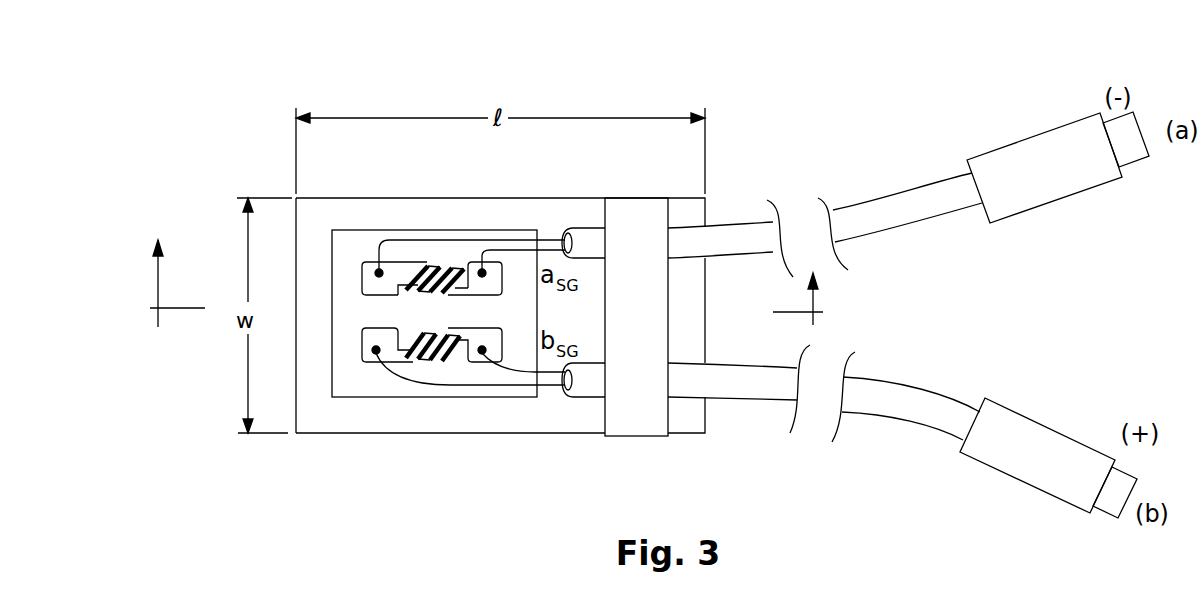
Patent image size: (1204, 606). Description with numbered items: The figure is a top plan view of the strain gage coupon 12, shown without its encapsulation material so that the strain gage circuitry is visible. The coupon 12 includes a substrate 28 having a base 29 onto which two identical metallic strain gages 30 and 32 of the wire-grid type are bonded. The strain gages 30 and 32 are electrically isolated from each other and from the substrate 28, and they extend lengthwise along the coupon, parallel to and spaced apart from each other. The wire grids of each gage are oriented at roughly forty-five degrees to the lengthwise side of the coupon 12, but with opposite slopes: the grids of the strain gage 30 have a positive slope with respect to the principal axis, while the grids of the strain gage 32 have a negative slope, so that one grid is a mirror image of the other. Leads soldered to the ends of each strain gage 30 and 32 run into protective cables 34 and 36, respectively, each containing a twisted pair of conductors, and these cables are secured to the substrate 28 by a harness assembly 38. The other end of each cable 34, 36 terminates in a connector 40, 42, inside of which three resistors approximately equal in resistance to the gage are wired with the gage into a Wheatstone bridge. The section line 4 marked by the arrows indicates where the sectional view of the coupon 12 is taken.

The section line 4— 4 is at (491, 280).
The strain gage coupon 12 is at (321, 99).
The substrate 28 is at (319, 433).
The base 29 is at (362, 228).
The strain gage 30 is at (455, 264).
The strain gage 32 is at (443, 362).
The protective cable 34 is at (585, 227).
The protective cable 36 is at (683, 398).
The harness assembly 38 is at (605, 402).
The connector 40 is at (1022, 138).
The connector 42 is at (1022, 477).